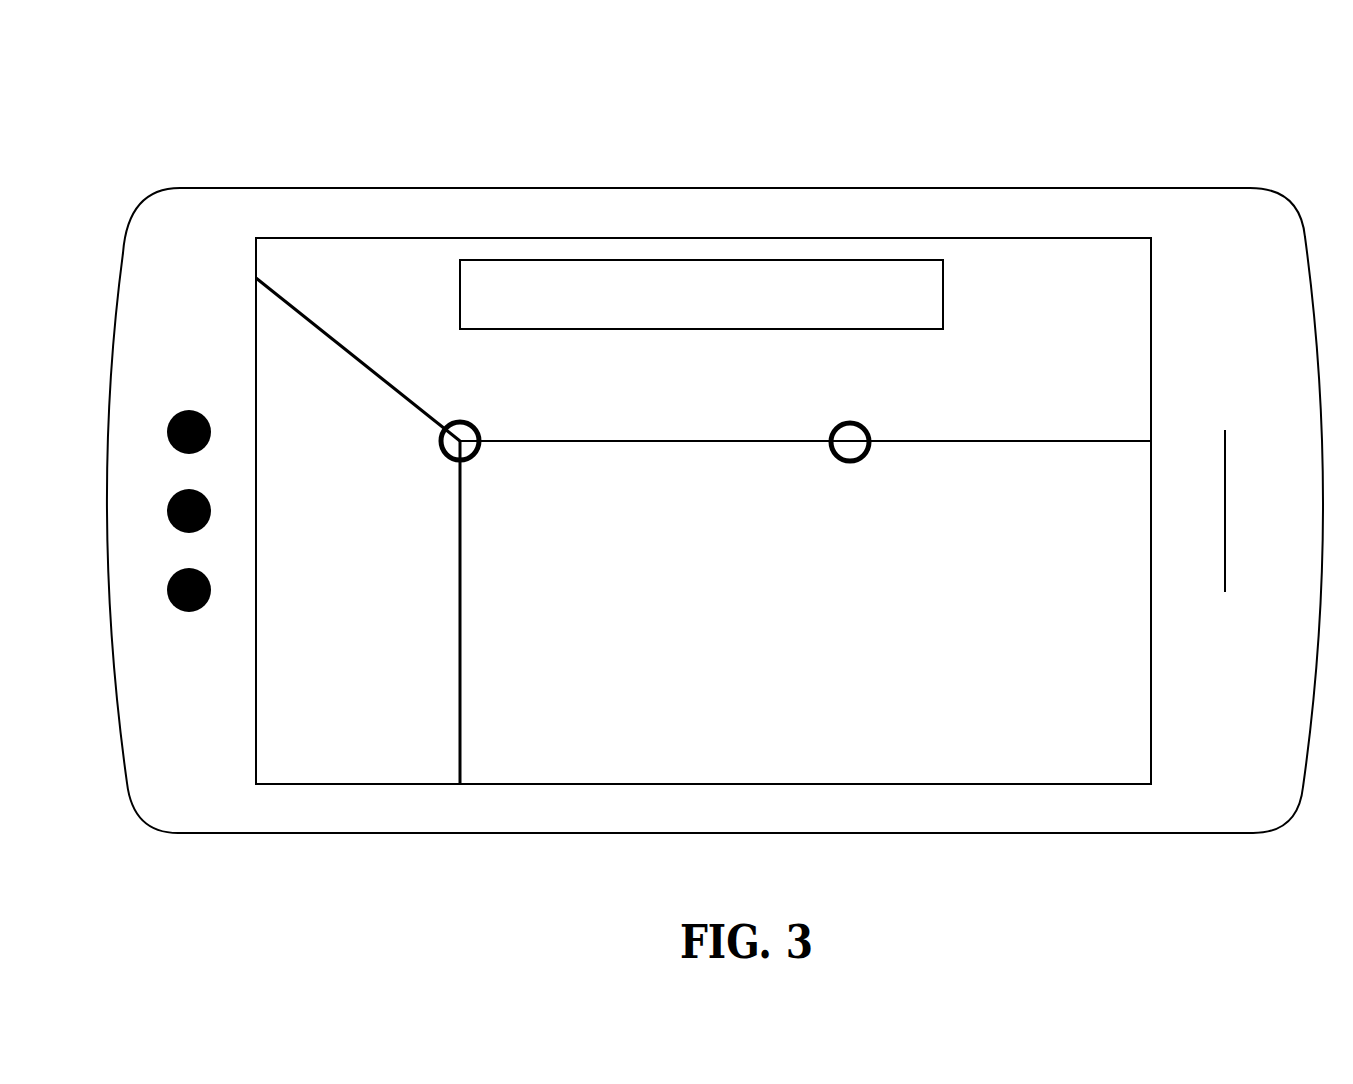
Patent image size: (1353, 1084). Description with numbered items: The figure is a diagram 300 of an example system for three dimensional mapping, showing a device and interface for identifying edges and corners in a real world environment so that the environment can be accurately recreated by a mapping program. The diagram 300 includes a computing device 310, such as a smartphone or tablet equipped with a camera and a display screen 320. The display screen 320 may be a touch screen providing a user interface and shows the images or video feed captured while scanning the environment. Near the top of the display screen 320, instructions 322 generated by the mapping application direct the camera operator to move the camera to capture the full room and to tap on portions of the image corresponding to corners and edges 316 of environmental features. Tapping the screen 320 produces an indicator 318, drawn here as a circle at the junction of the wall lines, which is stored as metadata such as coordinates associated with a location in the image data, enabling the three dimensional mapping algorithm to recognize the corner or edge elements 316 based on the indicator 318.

The diagram 300 is at (195, 83).
The computing device 310 is at (715, 510).
The corners and edges 316 is at (460, 600).
The indicator 318 is at (480, 425).
The display screen 320 is at (1151, 657).
The instructions 322 is at (948, 300).